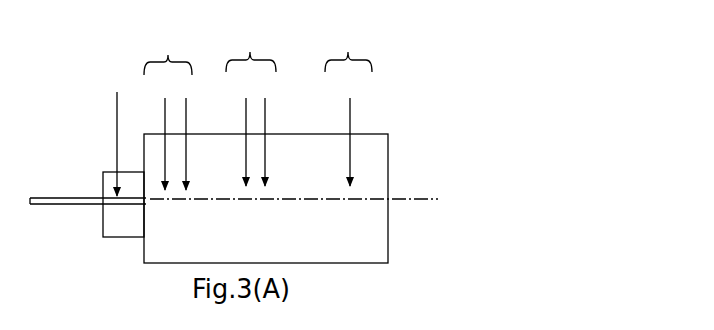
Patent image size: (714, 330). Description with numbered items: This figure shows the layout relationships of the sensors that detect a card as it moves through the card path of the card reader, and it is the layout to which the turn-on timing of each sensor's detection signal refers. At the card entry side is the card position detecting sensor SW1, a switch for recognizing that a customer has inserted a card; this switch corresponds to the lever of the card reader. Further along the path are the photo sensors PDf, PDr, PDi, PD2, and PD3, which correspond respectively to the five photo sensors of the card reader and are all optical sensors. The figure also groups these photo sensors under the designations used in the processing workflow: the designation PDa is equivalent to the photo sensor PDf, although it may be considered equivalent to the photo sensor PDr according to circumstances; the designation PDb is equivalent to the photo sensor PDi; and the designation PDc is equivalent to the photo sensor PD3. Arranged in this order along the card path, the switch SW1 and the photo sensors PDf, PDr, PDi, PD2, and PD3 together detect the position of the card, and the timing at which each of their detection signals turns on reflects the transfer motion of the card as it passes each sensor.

The card position detecting sensor SW1 is at (99, 134).
The photo sensor group a PDa is at (168, 51).
The photo sensor PDf is at (151, 134).
The photo sensor PDr is at (191, 132).
The photo sensor group b PDb is at (251, 50).
The photo sensor PDi is at (233, 134).
The photo sensor PD2 is at (273, 131).
The photo sensor group c PDc is at (348, 49).
The photo sensor PD3 is at (339, 131).